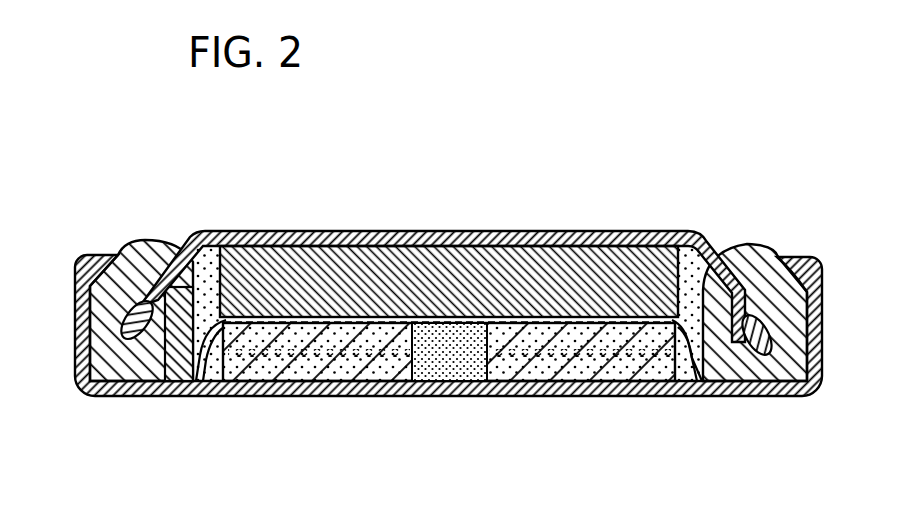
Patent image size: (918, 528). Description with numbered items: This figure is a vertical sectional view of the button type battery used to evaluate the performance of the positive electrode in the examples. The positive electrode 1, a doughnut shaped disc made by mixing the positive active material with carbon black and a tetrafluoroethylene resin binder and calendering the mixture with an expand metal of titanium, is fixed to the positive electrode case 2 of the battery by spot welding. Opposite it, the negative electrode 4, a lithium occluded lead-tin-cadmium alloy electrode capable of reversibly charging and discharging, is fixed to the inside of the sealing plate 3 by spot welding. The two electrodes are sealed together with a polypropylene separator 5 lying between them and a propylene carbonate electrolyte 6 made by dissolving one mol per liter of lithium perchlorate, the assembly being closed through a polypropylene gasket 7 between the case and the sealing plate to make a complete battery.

The positive electrode 1 is at (622, 370).
The positive electrode case 2 is at (777, 399).
The sealing plate 3 is at (672, 240).
The negative electrode 4 is at (428, 278).
The separator 5 is at (203, 362).
The electrolyte 6 is at (208, 268).
The gasket 7 is at (755, 268).